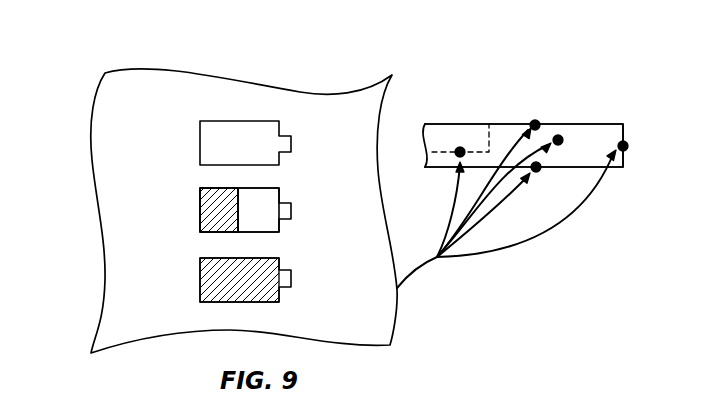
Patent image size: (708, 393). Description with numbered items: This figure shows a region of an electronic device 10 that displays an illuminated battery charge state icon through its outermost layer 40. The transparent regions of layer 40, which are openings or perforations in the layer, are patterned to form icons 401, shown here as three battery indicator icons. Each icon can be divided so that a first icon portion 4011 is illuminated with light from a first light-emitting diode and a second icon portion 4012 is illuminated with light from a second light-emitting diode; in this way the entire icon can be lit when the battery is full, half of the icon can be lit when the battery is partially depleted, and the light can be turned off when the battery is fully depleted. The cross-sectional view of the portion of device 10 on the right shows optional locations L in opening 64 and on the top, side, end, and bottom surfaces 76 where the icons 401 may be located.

The electronic device 10 is at (517, 61).
The layer 40 is at (368, 199).
The icon 401 is at (186, 143).
The icon portion 4011 is at (206, 238).
The icon portion 4012 is at (268, 238).
The opening 64 is at (436, 135).
The surfaces 76 is at (577, 124).
The locations L is at (548, 149).